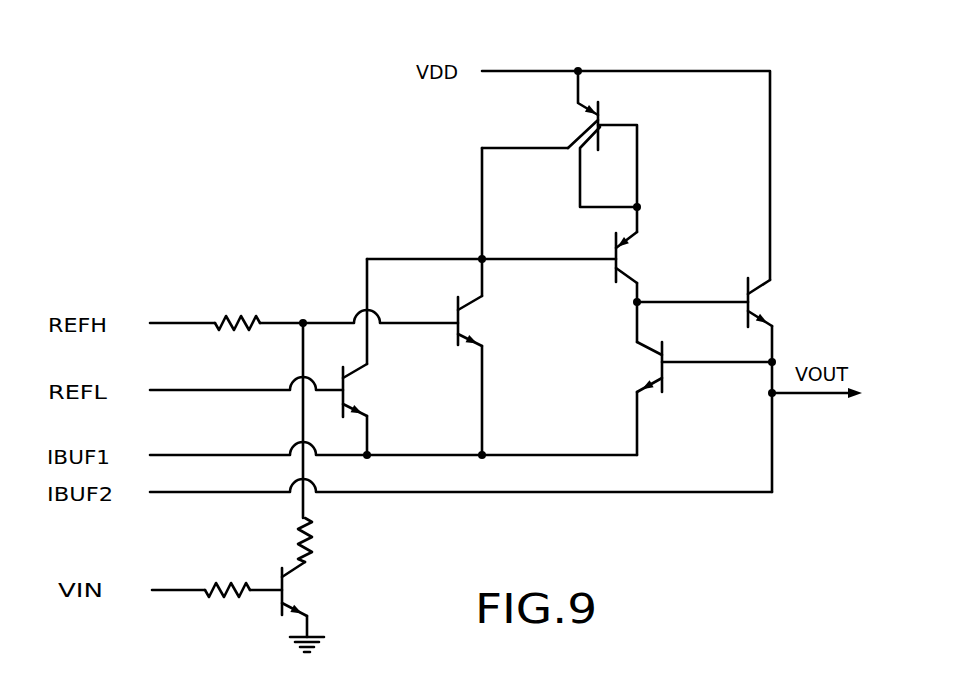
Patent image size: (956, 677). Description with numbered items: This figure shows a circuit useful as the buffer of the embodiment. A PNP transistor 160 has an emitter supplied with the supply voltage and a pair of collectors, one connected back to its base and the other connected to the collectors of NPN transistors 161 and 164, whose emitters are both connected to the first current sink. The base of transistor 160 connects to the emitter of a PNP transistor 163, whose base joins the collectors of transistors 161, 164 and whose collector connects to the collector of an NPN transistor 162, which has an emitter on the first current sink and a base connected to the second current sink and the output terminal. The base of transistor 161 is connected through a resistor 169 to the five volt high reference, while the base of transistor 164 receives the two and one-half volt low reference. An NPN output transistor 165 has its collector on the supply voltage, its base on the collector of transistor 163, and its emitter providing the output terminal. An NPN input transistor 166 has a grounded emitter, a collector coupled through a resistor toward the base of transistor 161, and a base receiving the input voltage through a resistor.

The PNP transistor 160 is at (604, 114).
The NPN transistor 161 is at (463, 320).
The NPN transistor 162 is at (654, 367).
The PNP transistor 163 is at (623, 250).
The NPN transistor 164 is at (352, 383).
The NPN output transistor 165 is at (755, 297).
The NPN input transistor 166 is at (295, 587).
The resistor 169 is at (258, 318).